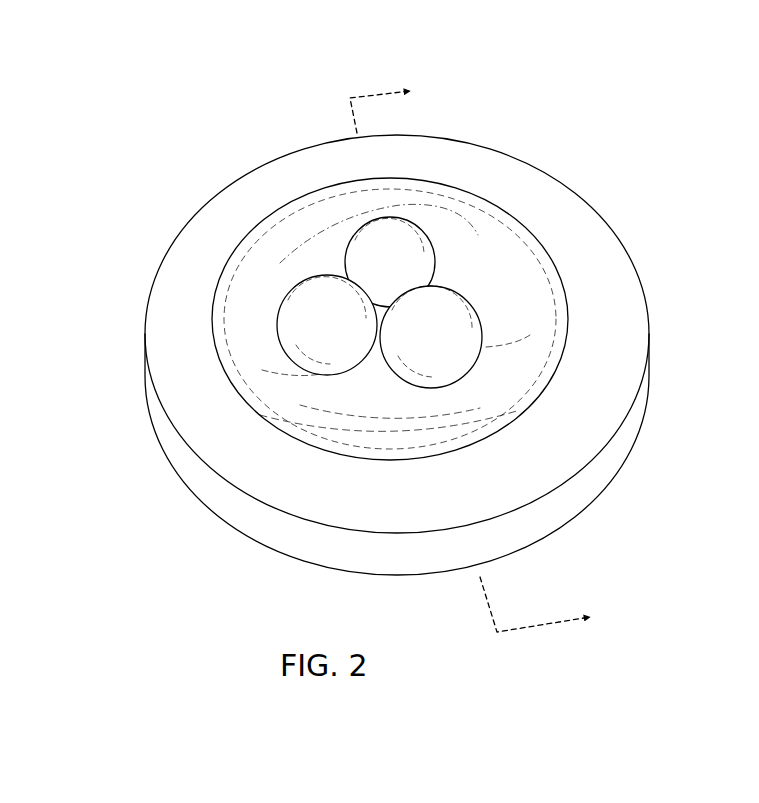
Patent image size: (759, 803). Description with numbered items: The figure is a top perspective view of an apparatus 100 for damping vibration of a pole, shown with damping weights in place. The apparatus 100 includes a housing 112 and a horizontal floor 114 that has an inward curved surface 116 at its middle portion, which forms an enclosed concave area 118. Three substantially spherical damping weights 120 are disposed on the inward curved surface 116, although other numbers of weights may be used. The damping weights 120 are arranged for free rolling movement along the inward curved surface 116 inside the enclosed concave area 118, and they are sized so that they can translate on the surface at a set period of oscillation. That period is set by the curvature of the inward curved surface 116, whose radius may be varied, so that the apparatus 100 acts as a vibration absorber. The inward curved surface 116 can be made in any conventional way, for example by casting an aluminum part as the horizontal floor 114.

The apparatus 100 is at (267, 101).
The housing 112 is at (593, 477).
The horizontal floor 114 is at (595, 312).
The inward curved surface 116 is at (555, 260).
The enclosed concave area 118 is at (482, 242).
The damping weight 120 is at (412, 217).